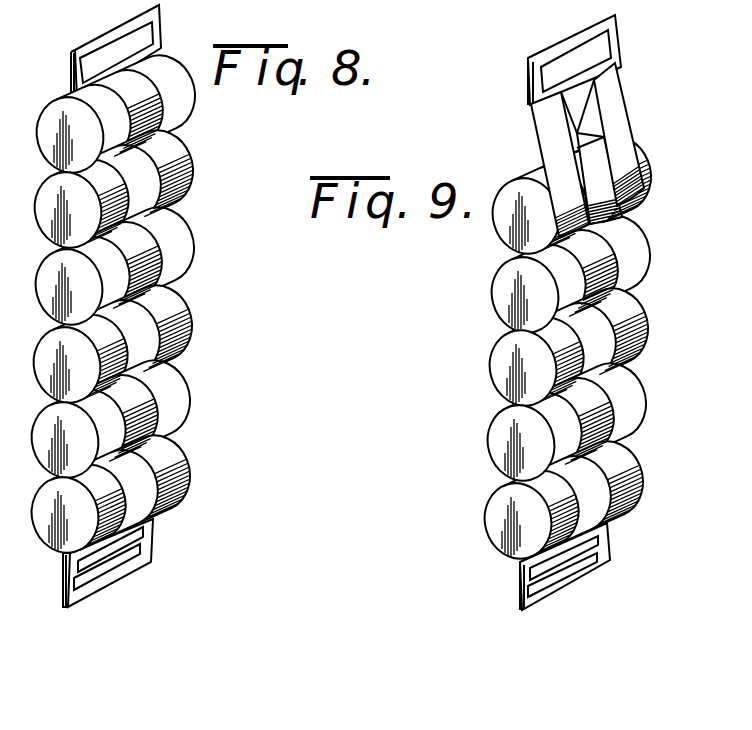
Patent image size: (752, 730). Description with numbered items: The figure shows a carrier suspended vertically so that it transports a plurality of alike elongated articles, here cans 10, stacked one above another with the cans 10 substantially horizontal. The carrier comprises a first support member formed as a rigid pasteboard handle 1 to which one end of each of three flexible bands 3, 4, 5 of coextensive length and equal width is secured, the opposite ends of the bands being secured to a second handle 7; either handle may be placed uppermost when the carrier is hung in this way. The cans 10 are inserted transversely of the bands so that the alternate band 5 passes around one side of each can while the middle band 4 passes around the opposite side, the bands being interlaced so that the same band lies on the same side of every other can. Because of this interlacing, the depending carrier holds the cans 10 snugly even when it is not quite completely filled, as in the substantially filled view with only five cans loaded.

In FIG. 8, the handle 1 is at (72, 53).
In FIG. 8, the flexible band 3 is at (100, 214).
In FIG. 9, the flexible band 3 is at (548, 133).
In FIG. 8, the middle band 4 is at (148, 93).
In FIG. 9, the middle band 4 is at (594, 110).
In FIG. 8, the alternate band 5 is at (190, 164).
In FIG. 9, the alternate band 5 is at (622, 98).
In FIG. 8, the second handle 7 is at (68, 606).
In FIG. 8, the can 10 is at (175, 218).
In FIG. 9, the can 10 is at (503, 289).